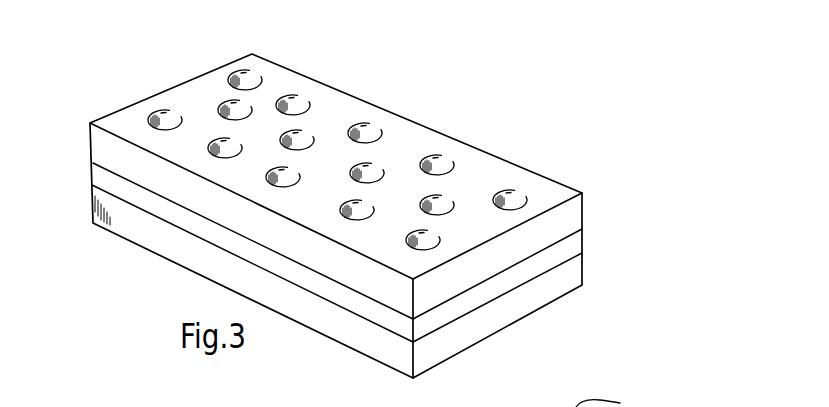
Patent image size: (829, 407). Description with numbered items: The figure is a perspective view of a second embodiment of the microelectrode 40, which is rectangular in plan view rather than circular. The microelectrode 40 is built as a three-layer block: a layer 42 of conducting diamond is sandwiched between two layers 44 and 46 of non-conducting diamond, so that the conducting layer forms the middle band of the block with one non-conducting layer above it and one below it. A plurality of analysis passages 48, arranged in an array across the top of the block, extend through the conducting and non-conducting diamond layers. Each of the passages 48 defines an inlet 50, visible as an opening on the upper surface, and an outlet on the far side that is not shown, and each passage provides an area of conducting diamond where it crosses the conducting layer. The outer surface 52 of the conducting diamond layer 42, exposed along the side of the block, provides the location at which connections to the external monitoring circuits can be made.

The microelectrode 40 is at (420, 107).
The layer of conducting diamond 42 is at (580, 242).
The layer of non-conducting diamond 44 is at (580, 213).
The layer of non-conducting diamond 46 is at (580, 272).
The analysis passages 48 is at (442, 200).
The inlets 50 is at (306, 136).
The outer surface 52 is at (250, 251).